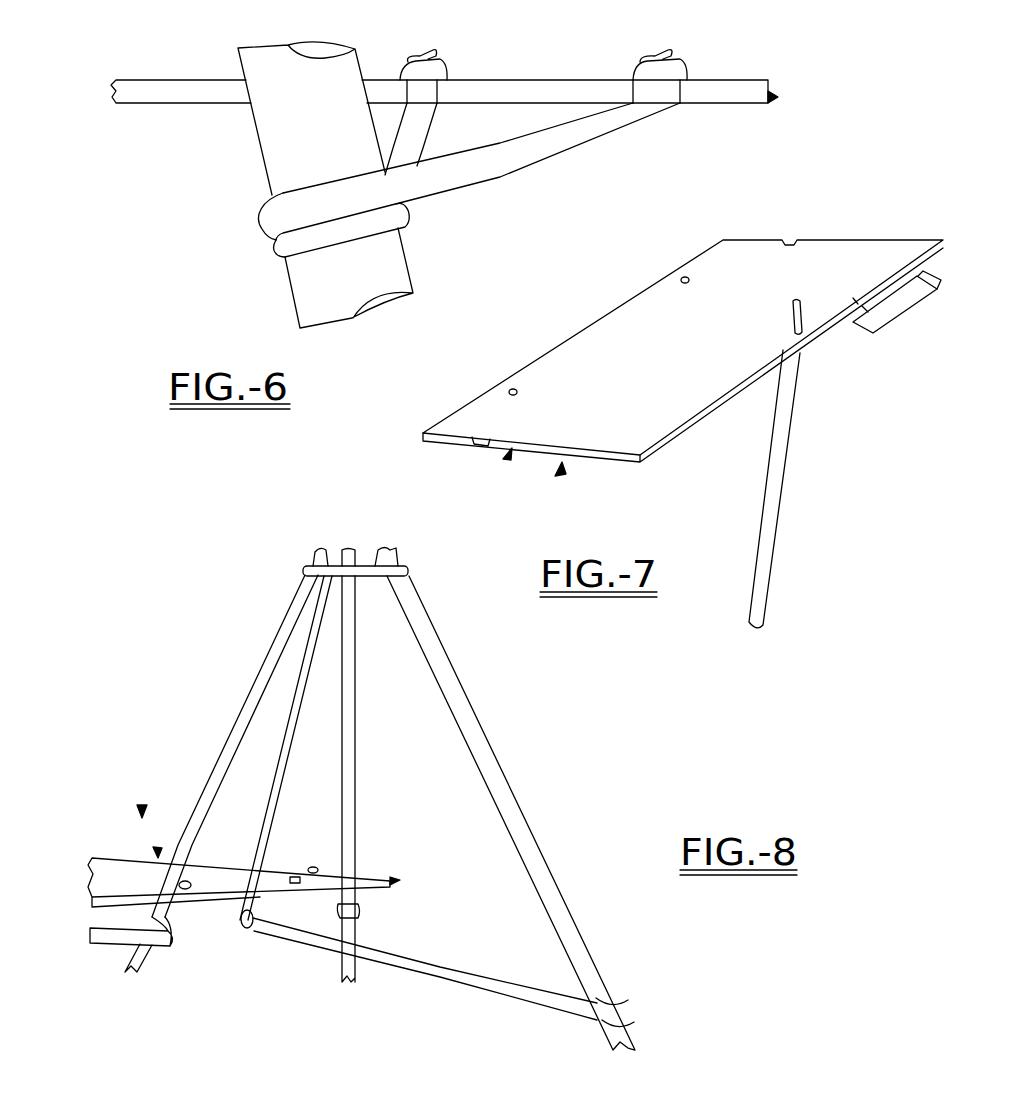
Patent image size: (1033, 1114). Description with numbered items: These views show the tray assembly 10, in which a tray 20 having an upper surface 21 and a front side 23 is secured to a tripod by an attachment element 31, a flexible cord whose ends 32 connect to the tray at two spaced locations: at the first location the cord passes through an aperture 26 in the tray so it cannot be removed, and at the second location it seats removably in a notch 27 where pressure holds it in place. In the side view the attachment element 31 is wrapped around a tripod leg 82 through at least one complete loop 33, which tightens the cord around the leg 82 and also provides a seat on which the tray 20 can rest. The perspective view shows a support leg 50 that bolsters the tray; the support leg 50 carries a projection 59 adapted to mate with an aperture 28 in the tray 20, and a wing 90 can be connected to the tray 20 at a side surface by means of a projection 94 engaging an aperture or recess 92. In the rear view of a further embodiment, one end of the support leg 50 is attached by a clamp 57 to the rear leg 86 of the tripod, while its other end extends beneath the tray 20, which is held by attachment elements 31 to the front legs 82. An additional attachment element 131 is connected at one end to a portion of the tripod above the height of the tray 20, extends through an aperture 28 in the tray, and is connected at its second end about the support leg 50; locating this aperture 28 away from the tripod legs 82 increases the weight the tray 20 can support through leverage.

In FIG. 7, the tray assembly 10 is at (558, 478).
In FIG. 8, the tray assembly 10 is at (142, 805).
In FIG. 6, the tray 20 is at (778, 98).
In FIG. 7, the tray 20 is at (505, 458).
In FIG. 8, the tray 20 is at (157, 847).
In FIG. 6, the upper surface 21 is at (557, 79).
In FIG. 7, the upper surface 21 is at (617, 352).
In FIG. 8, the upper surface 21 is at (140, 856).
In FIG. 7, the front side 23 is at (683, 433).
In FIG. 6, the aperture 26 is at (438, 92).
In FIG. 7, the aperture 26 is at (509, 390).
In FIG. 6, the notch 27 is at (684, 90).
In FIG. 7, the notch 27 is at (789, 240).
In FIG. 7, the aperture 28 is at (800, 335).
In FIG. 8, the aperture 28 is at (258, 887).
In FIG. 6, the attachment element 31 is at (510, 172).
In FIG. 8, the attachment element 31 is at (165, 945).
In FIG. 6, the end 32 is at (436, 56).
In FIG. 8, the end 32 is at (188, 881).
In FIG. 6, the loop 33 is at (260, 226).
In FIG. 7, the support leg 50 is at (780, 510).
In FIG. 8, the support leg 50 is at (307, 942).
In FIG. 8, the clamp 57 is at (600, 1002).
In FIG. 7, the projection 59 is at (789, 318).
In FIG. 6, the tripod leg 82 is at (265, 173).
In FIG. 8, the tripod leg 82 is at (236, 725).
In FIG. 8, the rear leg 86 is at (514, 797).
In FIG. 7, the wing 90 is at (884, 325).
In FIG. 7, the aperture or recess 92 is at (857, 300).
In FIG. 7, the projection 94 is at (905, 288).
In FIG. 8, the additional attachment element 131 is at (295, 718).